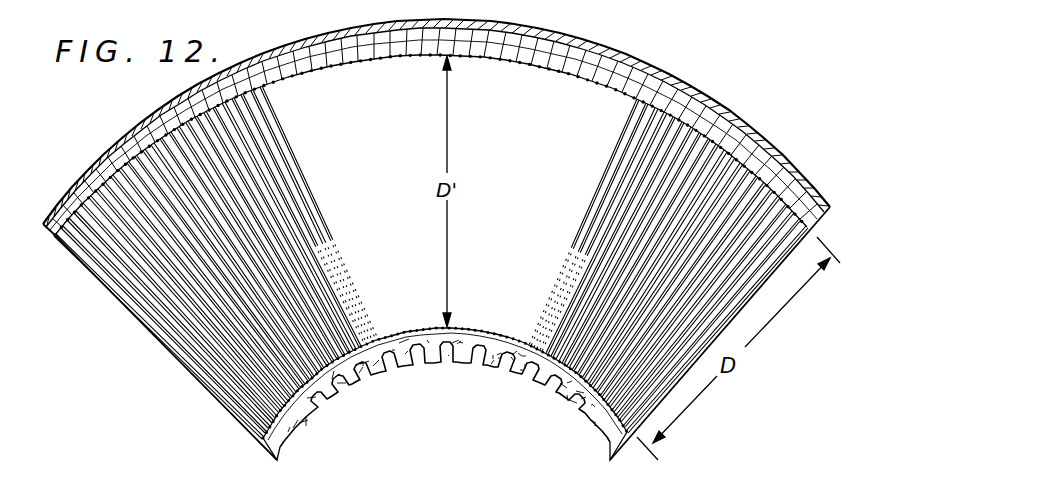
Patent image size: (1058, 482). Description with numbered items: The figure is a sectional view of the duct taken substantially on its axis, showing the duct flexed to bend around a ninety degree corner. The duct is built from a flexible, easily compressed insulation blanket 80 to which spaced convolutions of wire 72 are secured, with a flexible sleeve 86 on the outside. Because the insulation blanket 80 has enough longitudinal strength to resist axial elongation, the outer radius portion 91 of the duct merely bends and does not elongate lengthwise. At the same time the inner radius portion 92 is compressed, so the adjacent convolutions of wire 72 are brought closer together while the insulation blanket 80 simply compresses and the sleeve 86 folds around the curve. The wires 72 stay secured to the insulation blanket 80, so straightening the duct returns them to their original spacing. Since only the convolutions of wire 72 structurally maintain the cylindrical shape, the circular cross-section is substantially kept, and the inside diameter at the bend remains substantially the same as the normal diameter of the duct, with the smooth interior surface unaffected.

The wire 72 is at (292, 218).
The insulation blanket 80 is at (663, 72).
The sleeve 86 is at (107, 158).
The outer radius portion 91 is at (520, 25).
The inner radius portion 92 is at (448, 366).